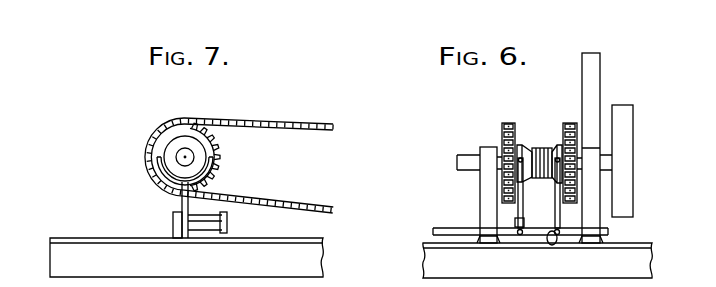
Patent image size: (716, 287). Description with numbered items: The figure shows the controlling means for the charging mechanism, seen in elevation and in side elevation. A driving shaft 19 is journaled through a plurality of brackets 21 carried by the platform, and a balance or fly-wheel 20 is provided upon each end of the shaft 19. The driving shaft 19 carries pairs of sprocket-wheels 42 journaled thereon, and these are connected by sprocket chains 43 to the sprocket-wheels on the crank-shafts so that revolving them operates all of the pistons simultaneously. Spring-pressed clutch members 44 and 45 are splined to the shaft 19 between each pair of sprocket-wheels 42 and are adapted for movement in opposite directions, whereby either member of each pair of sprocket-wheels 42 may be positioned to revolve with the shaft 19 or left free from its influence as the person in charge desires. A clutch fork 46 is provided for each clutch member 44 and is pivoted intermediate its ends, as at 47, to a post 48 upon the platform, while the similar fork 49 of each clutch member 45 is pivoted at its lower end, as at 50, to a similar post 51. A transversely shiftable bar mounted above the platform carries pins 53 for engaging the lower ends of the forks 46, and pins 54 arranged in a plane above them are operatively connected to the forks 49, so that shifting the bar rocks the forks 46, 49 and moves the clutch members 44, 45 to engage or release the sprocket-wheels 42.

In FIG. 6, the driving shaft 19 is at (457, 160).
In FIG. 6, the balance or fly-wheel 20 is at (625, 162).
In FIG. 6, the bracket 21 is at (593, 80).
In FIG. 7, the sprocket-wheel 42 is at (212, 148).
In FIG. 7, the sprocket chain 43 is at (293, 113).
In FIG. 6, the clutch member 44 is at (520, 142).
In FIG. 6, the clutch member 45 is at (552, 145).
In FIG. 6, the clutch fork 46 is at (518, 207).
In FIG. 6, the pivot 47 is at (521, 222).
In FIG. 6, the post 48 is at (520, 236).
In FIG. 6, the fork 49 is at (556, 202).
In FIG. 6, the pivot 50 is at (548, 241).
In FIG. 6, the post 51 is at (557, 240).
In FIG. 7, the pin 53 is at (227, 222).
In FIG. 7, the pin 54 is at (182, 203).